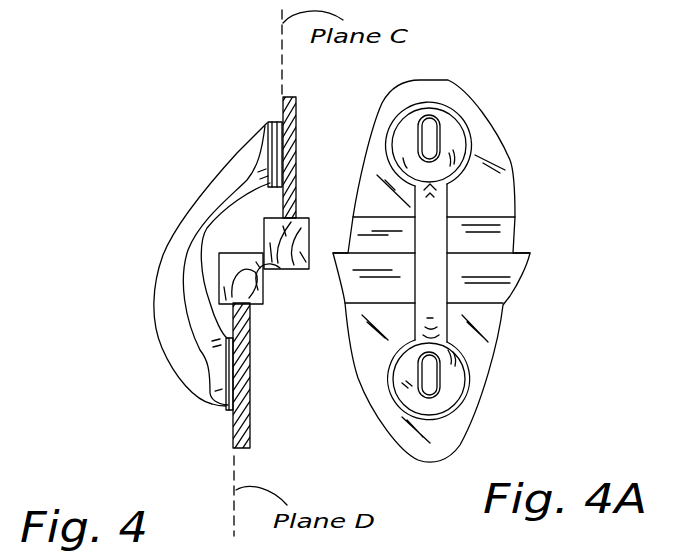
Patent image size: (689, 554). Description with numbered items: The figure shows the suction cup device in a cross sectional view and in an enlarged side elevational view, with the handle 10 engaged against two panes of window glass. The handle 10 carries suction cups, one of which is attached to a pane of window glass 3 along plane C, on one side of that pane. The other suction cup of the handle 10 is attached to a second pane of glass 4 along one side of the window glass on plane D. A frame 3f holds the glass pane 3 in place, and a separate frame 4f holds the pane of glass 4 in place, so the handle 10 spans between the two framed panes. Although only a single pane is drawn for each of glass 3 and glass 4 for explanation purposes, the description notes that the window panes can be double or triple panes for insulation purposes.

In FIG. 4, the handle 10 is at (194, 153).
In FIG. 4A, the handle 10 is at (468, 106).
In FIG. 4, the pane of window glass 3 is at (297, 133).
In FIG. 4A, the pane of window glass 3 is at (512, 187).
In FIG. 4, the frame 3f is at (305, 219).
In FIG. 4A, the frame 3f is at (506, 235).
In FIG. 4, the pane of glass 4 is at (250, 394).
In FIG. 4A, the pane of glass 4 is at (482, 360).
In FIG. 4, the frame 4f is at (263, 286).
In FIG. 4A, the frame 4f is at (520, 262).